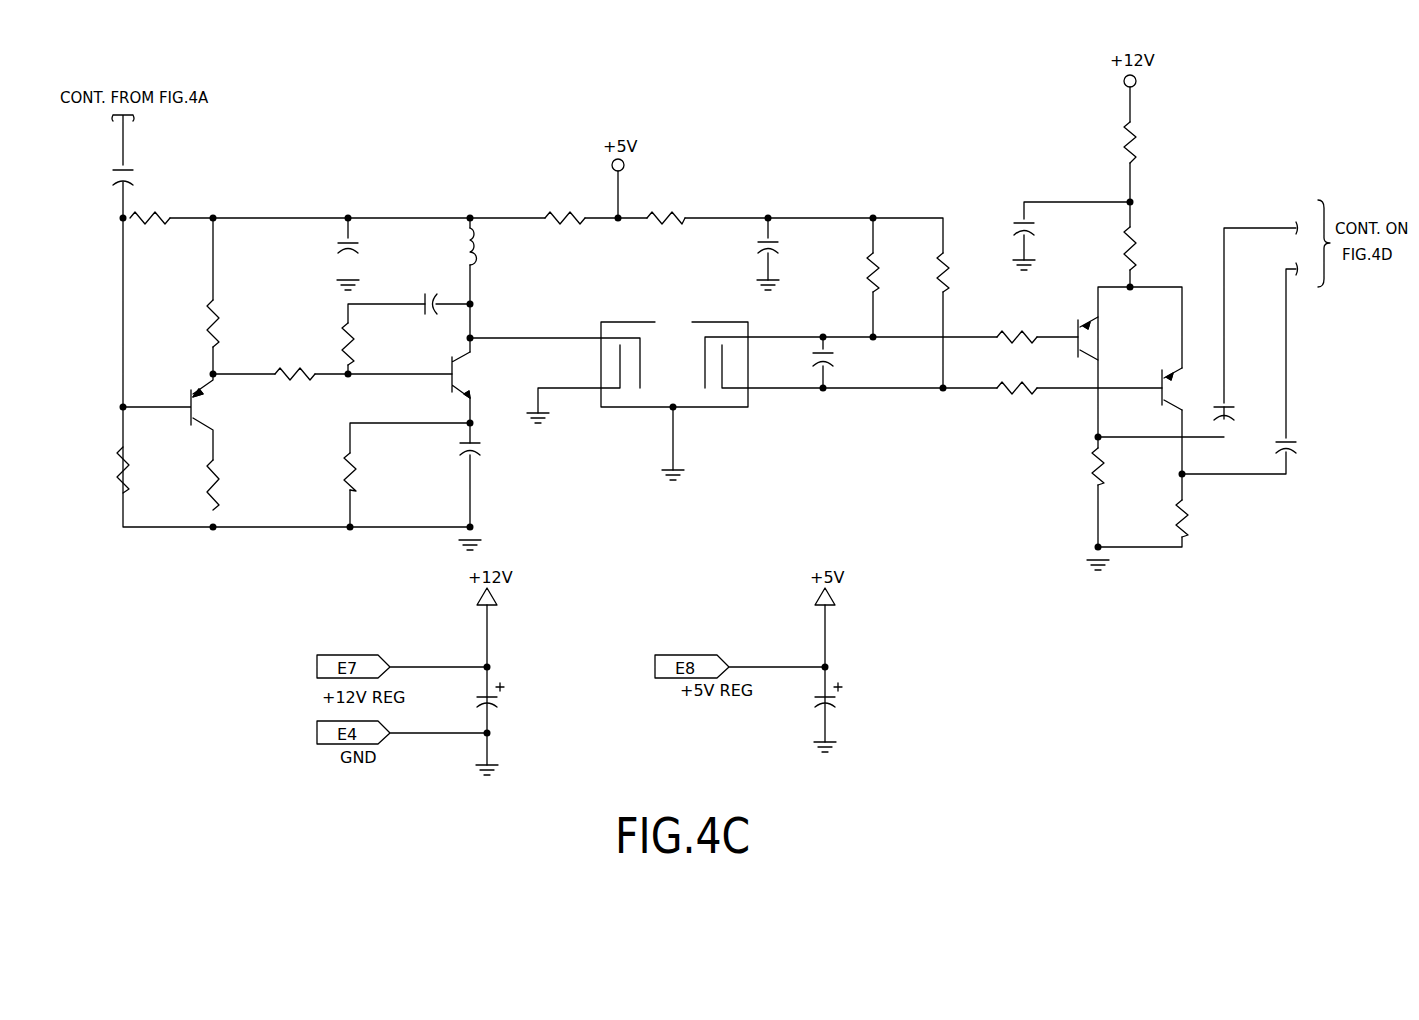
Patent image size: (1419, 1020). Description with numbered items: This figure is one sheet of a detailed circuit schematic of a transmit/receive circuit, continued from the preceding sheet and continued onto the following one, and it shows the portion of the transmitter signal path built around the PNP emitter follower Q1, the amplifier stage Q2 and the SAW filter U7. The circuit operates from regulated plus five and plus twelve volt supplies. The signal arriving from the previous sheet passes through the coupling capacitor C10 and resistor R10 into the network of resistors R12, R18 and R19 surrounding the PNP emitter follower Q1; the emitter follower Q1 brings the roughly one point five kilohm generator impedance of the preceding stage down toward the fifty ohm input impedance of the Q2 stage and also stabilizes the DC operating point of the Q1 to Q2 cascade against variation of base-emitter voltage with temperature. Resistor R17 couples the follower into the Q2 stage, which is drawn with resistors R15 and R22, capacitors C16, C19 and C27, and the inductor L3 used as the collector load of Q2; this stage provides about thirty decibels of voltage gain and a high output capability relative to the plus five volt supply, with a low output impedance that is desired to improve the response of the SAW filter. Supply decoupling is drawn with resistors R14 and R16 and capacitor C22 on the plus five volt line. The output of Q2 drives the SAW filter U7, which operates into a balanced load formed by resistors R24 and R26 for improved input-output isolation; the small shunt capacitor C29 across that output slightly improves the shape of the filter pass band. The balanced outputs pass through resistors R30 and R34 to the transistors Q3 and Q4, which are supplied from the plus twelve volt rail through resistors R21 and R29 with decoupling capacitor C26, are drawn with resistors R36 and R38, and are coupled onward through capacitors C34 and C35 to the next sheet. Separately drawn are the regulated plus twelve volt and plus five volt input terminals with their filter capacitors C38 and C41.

The capacitor C10 is at (148, 172).
The resistor R10 is at (150, 206).
The resistor R12 is at (193, 323).
The resistor R17 is at (295, 360).
The PNP emitter follower Q1 is at (183, 417).
The resistor R18 is at (105, 470).
The resistor R19 is at (232, 485).
The capacitor C16 is at (370, 242).
The capacitor C19 is at (411, 296).
The resistor R15 is at (370, 344).
The collector load L3 is at (490, 246).
The Q2 stage Q2 is at (478, 373).
The resistor R22 is at (367, 472).
The capacitor C27 is at (493, 453).
The resistor R14 is at (565, 206).
The resistor R16 is at (666, 205).
The capacitor C22 is at (792, 244).
The SAW filter U7 is at (674, 351).
The resistor R24 is at (891, 272).
The resistor R26 is at (961, 272).
The shunt capacitor C29 is at (847, 358).
The resistor R30 is at (1017, 325).
The resistor R34 is at (1017, 376).
The resistor R21 is at (1151, 142).
The capacitor C26 is at (1049, 233).
The resistor R29 is at (1148, 248).
The transistor Q3 is at (1103, 338).
The transistor Q4 is at (1188, 389).
The capacitor C34 is at (1244, 400).
The capacitor C35 is at (1305, 433).
The resistor R36 is at (1118, 466).
The resistor R38 is at (1203, 518).
The capacitor C38 is at (510, 695).
The capacitor C41 is at (848, 695).